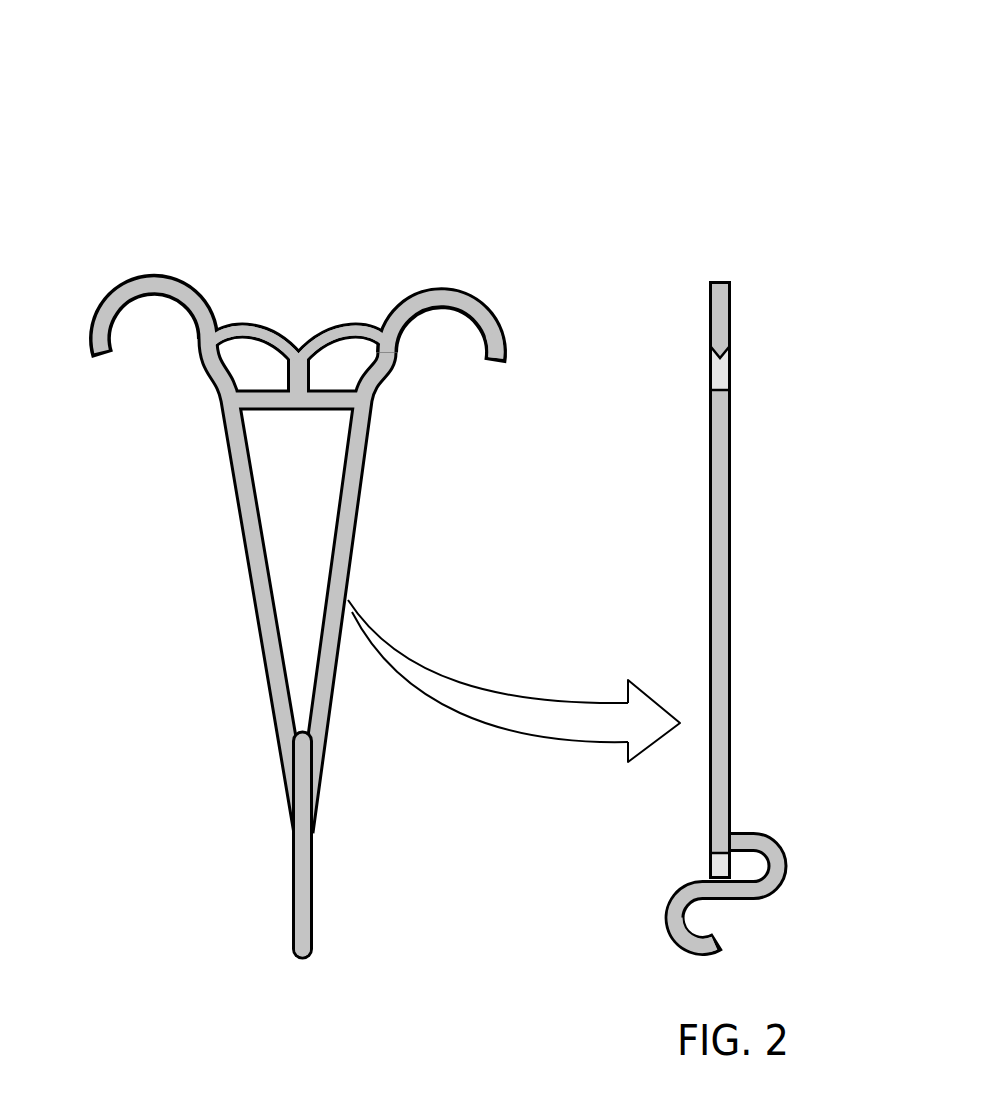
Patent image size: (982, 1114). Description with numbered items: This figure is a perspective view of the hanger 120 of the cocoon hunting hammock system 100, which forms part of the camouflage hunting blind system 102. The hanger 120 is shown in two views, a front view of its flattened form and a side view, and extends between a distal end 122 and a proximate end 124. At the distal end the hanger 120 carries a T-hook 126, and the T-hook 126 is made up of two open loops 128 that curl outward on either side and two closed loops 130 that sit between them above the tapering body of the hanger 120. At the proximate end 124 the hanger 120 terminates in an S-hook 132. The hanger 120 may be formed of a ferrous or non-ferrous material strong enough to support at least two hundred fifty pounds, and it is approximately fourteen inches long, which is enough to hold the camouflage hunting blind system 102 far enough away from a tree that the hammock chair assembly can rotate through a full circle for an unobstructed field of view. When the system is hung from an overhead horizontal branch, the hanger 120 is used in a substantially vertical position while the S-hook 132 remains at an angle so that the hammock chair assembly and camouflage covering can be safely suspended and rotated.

The cocoon hunting hammock system 100 is at (503, 97).
The camouflage hunting blind system 102 is at (530, 135).
The hanger 120 is at (243, 577).
The distal end 122 is at (160, 275).
The proximate end 124 is at (313, 895).
The T-hook 126 is at (495, 303).
The open loop 128 is at (472, 288).
The closed loop 130 is at (348, 317).
The S-hook 132 is at (293, 922).